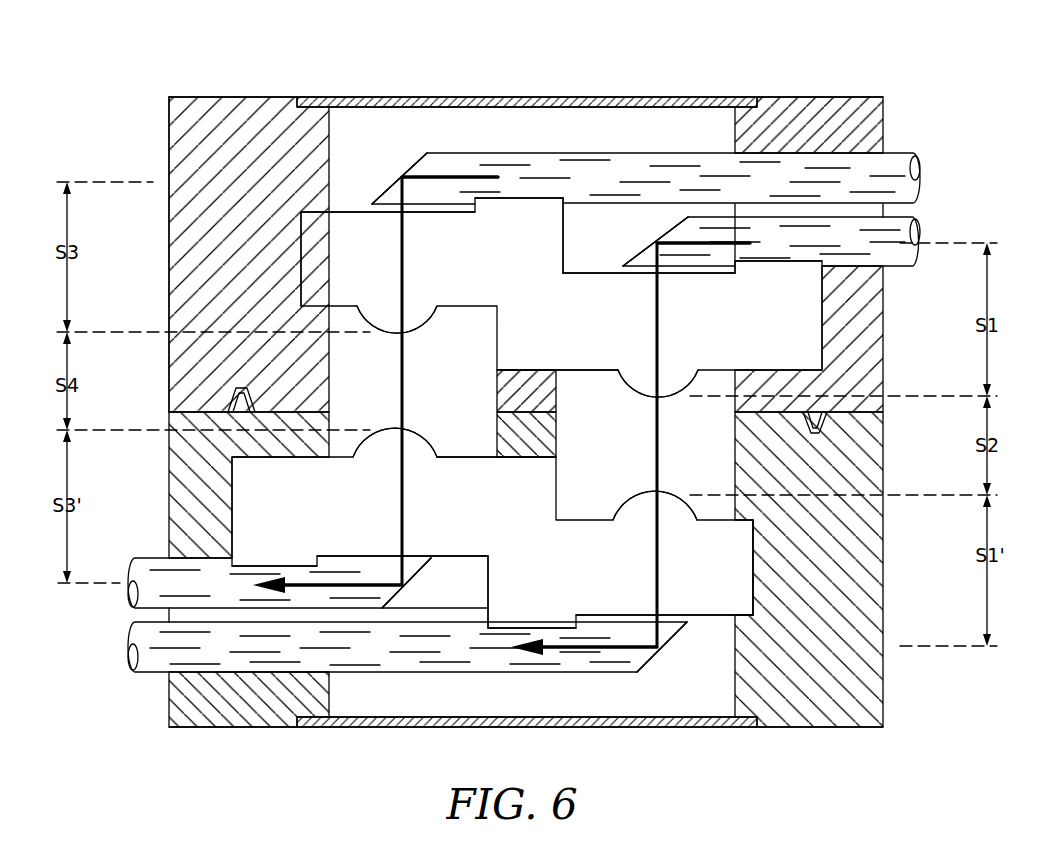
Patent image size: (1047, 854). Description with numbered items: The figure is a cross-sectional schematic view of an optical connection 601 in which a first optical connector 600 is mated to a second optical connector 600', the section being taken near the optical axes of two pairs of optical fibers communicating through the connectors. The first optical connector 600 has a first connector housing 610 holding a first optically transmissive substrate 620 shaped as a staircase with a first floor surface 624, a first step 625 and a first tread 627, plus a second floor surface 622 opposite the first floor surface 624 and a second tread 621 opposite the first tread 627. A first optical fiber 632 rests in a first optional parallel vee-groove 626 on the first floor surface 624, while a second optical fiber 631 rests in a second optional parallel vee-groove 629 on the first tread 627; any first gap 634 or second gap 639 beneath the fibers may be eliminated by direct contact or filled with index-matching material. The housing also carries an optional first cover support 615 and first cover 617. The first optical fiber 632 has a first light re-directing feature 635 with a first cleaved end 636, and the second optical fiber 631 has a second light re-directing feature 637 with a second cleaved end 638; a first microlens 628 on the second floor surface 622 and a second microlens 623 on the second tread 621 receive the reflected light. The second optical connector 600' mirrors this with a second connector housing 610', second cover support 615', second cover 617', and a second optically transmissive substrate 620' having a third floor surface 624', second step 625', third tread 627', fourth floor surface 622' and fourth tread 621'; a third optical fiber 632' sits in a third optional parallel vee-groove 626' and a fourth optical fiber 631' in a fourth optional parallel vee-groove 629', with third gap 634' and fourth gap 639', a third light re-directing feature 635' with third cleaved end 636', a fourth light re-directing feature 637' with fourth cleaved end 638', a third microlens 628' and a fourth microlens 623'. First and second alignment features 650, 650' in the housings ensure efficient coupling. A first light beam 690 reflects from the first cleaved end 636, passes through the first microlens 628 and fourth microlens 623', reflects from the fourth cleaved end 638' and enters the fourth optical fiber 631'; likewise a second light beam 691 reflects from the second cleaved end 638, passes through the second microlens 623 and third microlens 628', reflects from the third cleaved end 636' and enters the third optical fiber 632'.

The first optical connector 600 is at (501, 66).
The second optical connector 600' is at (480, 750).
The optical connection 601 is at (54, 89).
The first connector housing 610 is at (526, 230).
The second connector housing 610' is at (526, 594).
The first cover support 615 is at (525, 76).
The second cover support 615' is at (535, 748).
The first cover 617 is at (532, 76).
The second cover 617' is at (532, 748).
The first optically transmissive substrate 620 is at (459, 297).
The second optically transmissive substrate 620' is at (596, 528).
The second tread 621 is at (201, 264).
The fourth tread 621' is at (851, 563).
The second floor surface 622 is at (557, 352).
The fourth floor surface 622' is at (496, 478).
The second microlens 623 is at (417, 333).
The fourth microlens 623' is at (636, 493).
The first floor surface 624 is at (649, 301).
The third floor surface 624' is at (402, 528).
The first step 625 is at (519, 244).
The second step 625' is at (538, 581).
The first optional parallel vee-groove 626 is at (778, 295).
The third optional parallel vee-groove 626' is at (274, 536).
The first tread 627 is at (388, 242).
The third tread 627' is at (664, 588).
The first microlens 628 is at (636, 406).
The third microlens 628' is at (413, 424).
The second optional parallel vee-groove 629 is at (518, 226).
The fourth optional parallel vee-groove 629' is at (537, 600).
The second optical fiber 631 is at (667, 158).
The fourth optical fiber 631' is at (385, 665).
The first optical fiber 632 is at (804, 231).
The third optical fiber 632' is at (278, 594).
The first gap 634 is at (703, 193).
The third gap 634' is at (336, 542).
The first light re-directing feature 635 is at (653, 191).
The third light re-directing feature 635' is at (406, 634).
The first cleaved end 636 is at (629, 241).
The third cleaved end 636' is at (422, 583).
The second light re-directing feature 637 is at (407, 125).
The fourth light re-directing feature 637' is at (649, 700).
The second cleaved end 638 is at (389, 174).
The fourth cleaved end 638' is at (675, 652).
The second gap 639 is at (450, 157).
The fourth gap 639' is at (593, 608).
The first alignment feature 650 is at (175, 393).
The second alignment feature 650' is at (887, 431).
The first light beam 690 is at (570, 648).
The second light beam 691 is at (352, 585).